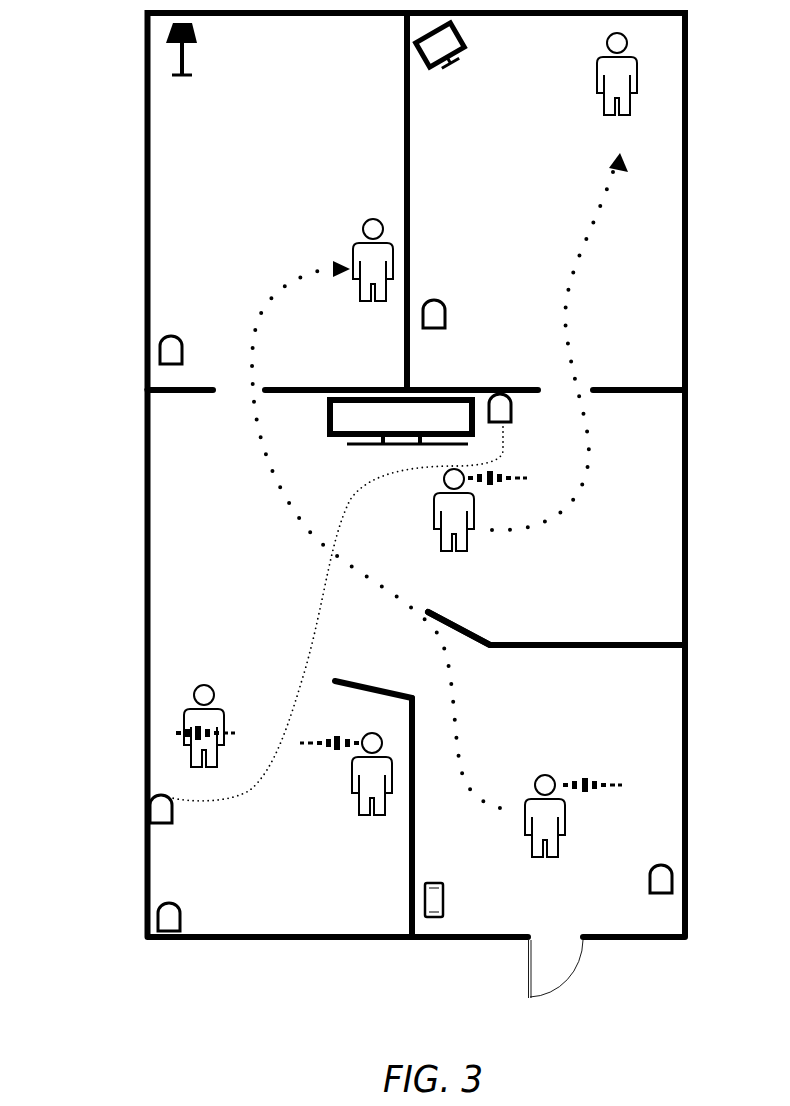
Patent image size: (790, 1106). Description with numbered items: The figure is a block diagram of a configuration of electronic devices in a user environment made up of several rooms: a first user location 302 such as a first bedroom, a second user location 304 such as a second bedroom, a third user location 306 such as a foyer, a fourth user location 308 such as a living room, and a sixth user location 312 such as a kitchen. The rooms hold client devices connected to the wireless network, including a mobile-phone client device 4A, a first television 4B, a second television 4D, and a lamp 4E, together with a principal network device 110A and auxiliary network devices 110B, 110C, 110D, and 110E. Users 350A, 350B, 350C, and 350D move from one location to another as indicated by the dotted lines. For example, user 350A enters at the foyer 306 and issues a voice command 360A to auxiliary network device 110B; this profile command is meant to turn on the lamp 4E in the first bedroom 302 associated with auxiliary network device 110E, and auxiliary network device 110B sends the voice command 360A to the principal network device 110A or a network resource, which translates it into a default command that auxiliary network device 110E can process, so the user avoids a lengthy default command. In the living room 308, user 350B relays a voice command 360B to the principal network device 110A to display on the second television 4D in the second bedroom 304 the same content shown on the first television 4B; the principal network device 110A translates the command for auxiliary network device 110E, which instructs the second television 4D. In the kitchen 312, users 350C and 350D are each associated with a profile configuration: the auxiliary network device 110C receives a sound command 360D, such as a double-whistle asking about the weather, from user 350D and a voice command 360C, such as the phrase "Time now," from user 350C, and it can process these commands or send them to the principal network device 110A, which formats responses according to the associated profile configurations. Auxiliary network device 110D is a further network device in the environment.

The first user location 302 is at (278, 203).
The second user location 304 is at (546, 201).
The third user location 306 is at (548, 663).
The fourth user location 308 is at (417, 517).
The sixth user location 312 is at (280, 663).
The client device 4A is at (443, 900).
The client device 4B is at (326, 410).
The client device 4D is at (466, 42).
The client device 4E is at (197, 38).
The principal network device 110A is at (512, 415).
The auxiliary network device 110B is at (655, 865).
The auxiliary network device 110C is at (180, 905).
The auxiliary network device 110D is at (447, 318).
The auxiliary network device 110E is at (170, 336).
The user 350A is at (456, 555).
The user 350B is at (534, 308).
The user 350C is at (371, 789).
The user 350D is at (203, 742).
The voice command 360A is at (585, 778).
The voice command 360B is at (490, 486).
The voice command 360C is at (340, 752).
The sound command 360D is at (218, 728).